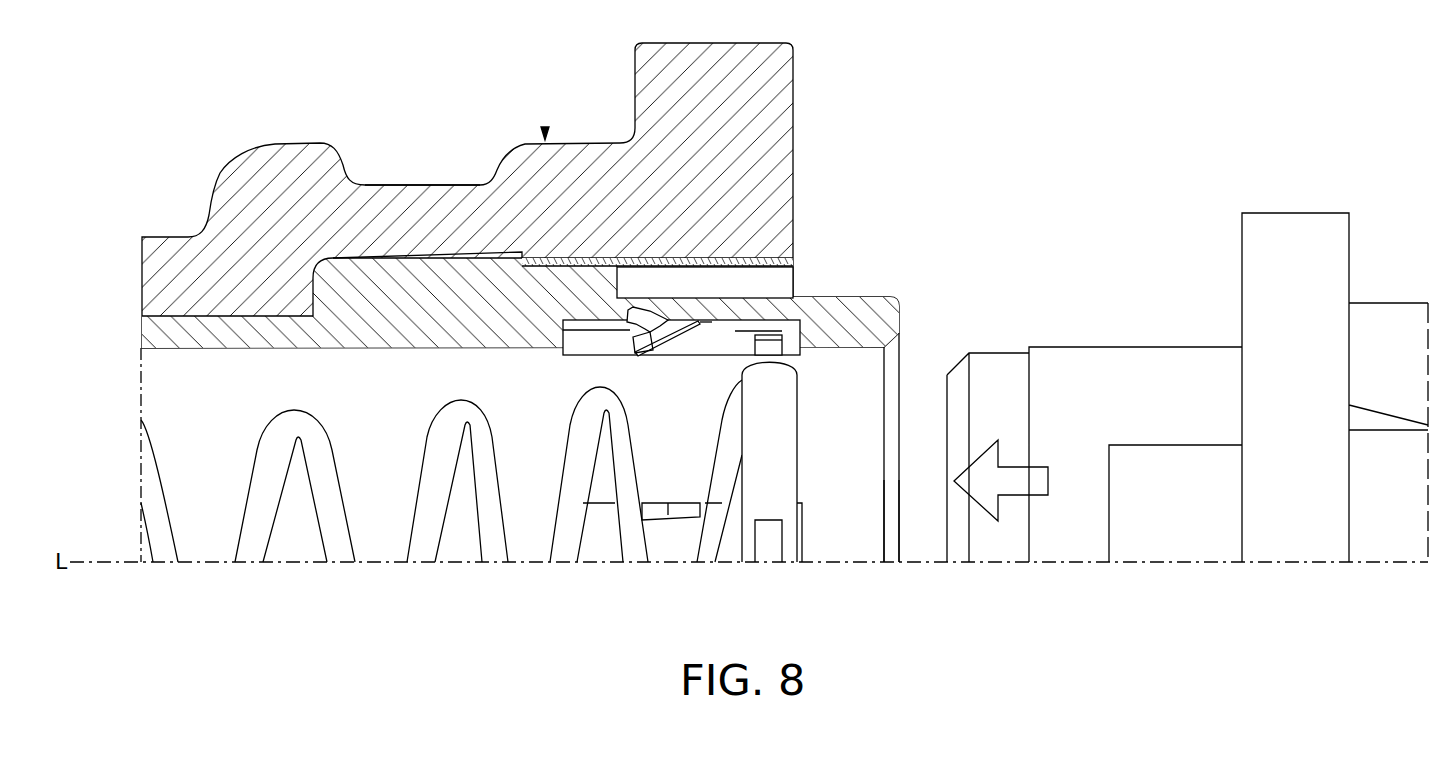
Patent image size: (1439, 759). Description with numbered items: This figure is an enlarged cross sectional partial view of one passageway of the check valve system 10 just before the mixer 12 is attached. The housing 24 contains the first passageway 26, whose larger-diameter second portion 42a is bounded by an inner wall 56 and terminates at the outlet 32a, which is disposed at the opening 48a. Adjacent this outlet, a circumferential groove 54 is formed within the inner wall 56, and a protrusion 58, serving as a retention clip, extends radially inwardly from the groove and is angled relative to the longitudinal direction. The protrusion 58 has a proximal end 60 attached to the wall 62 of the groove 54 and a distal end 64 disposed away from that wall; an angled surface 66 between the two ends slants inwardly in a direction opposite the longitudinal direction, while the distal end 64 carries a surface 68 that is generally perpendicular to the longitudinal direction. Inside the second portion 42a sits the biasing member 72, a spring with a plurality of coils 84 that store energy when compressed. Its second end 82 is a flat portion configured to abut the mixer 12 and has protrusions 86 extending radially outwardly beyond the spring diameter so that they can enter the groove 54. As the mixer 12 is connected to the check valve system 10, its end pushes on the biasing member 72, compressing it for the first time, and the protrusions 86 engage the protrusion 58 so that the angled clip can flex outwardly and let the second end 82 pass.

The check valve system 10 is at (545, 130).
The mixer 12 is at (1122, 347).
The housing 24 is at (443, 185).
The first passageway 26 is at (387, 185).
The outlet 32a is at (900, 386).
The second portion 42a is at (163, 378).
The opening 48a is at (900, 488).
The circumferential groove 54 is at (760, 331).
The inner wall 56 is at (498, 349).
The protrusion 58 is at (650, 360).
The proximal end 60 is at (643, 314).
The wall 62 is at (712, 333).
The distal end 64 is at (632, 342).
The angled surface 66 is at (680, 344).
The surface 68 is at (627, 347).
The biasing member 72 is at (340, 470).
The second end 82 is at (798, 443).
The coils 84 is at (493, 450).
The protrusions 86 is at (772, 345).